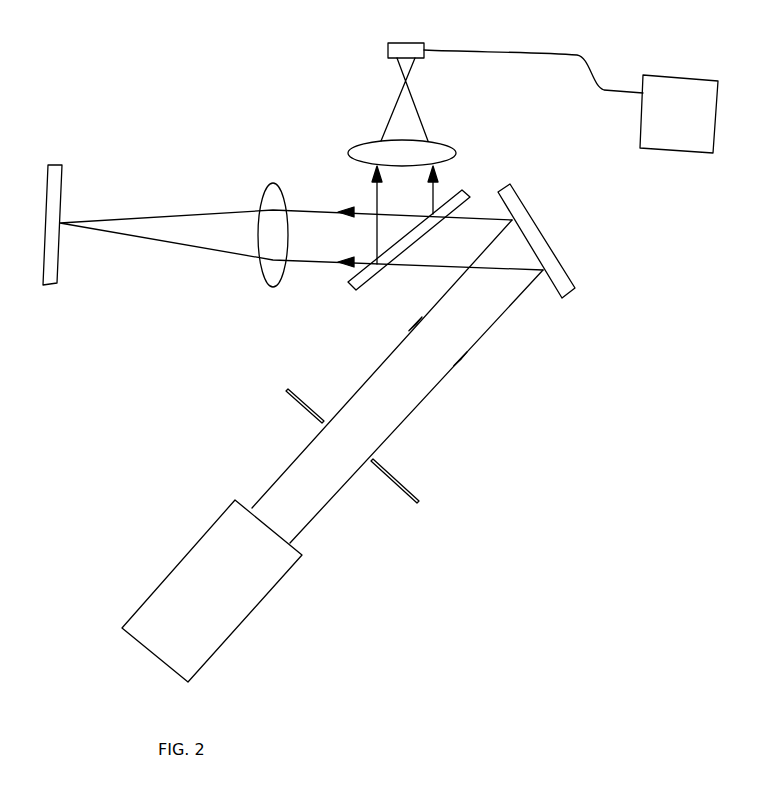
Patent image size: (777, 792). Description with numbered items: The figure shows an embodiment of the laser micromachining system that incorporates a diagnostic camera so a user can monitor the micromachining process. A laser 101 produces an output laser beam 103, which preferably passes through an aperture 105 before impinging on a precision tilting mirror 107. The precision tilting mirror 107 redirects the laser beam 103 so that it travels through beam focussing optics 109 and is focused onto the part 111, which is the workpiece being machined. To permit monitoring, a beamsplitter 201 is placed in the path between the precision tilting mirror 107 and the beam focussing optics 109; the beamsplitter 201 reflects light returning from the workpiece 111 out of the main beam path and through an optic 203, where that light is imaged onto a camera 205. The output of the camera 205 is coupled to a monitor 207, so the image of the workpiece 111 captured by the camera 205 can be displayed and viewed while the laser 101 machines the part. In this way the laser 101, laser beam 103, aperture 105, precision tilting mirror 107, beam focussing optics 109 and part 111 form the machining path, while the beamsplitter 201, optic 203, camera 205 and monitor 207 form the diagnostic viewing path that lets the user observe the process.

The laser 101 is at (247, 612).
The laser beam 103 is at (320, 505).
The aperture 105 is at (420, 500).
The precision tilting mirror 107 is at (577, 275).
The beam focussing optics 109 is at (270, 287).
The part 111 is at (52, 285).
The beamsplitter 201 is at (353, 290).
The optic 203 is at (456, 156).
The camera 205 is at (388, 50).
The monitor 207 is at (697, 153).